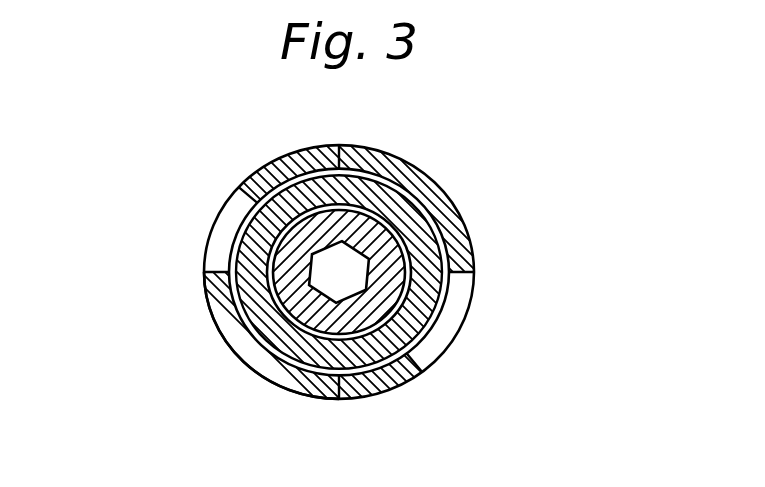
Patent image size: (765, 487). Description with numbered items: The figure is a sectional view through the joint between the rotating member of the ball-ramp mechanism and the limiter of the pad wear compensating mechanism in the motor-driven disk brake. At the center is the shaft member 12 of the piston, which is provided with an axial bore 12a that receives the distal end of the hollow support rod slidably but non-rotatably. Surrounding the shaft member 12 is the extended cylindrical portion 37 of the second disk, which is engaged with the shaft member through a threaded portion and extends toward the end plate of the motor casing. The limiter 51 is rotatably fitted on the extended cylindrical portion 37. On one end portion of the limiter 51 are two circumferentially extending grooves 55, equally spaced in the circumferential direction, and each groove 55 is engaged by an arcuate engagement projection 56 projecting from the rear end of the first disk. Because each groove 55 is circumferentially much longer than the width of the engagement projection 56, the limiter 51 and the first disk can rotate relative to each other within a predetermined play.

The limiter 51 is at (402, 272).
The circumferentially extending groove 55 is at (223, 227).
The arcuate engagement projection 56 is at (280, 157).
The extended cylindrical portion 37 is at (250, 303).
The shaft member 12 is at (413, 234).
The axial bore 12a is at (262, 355).